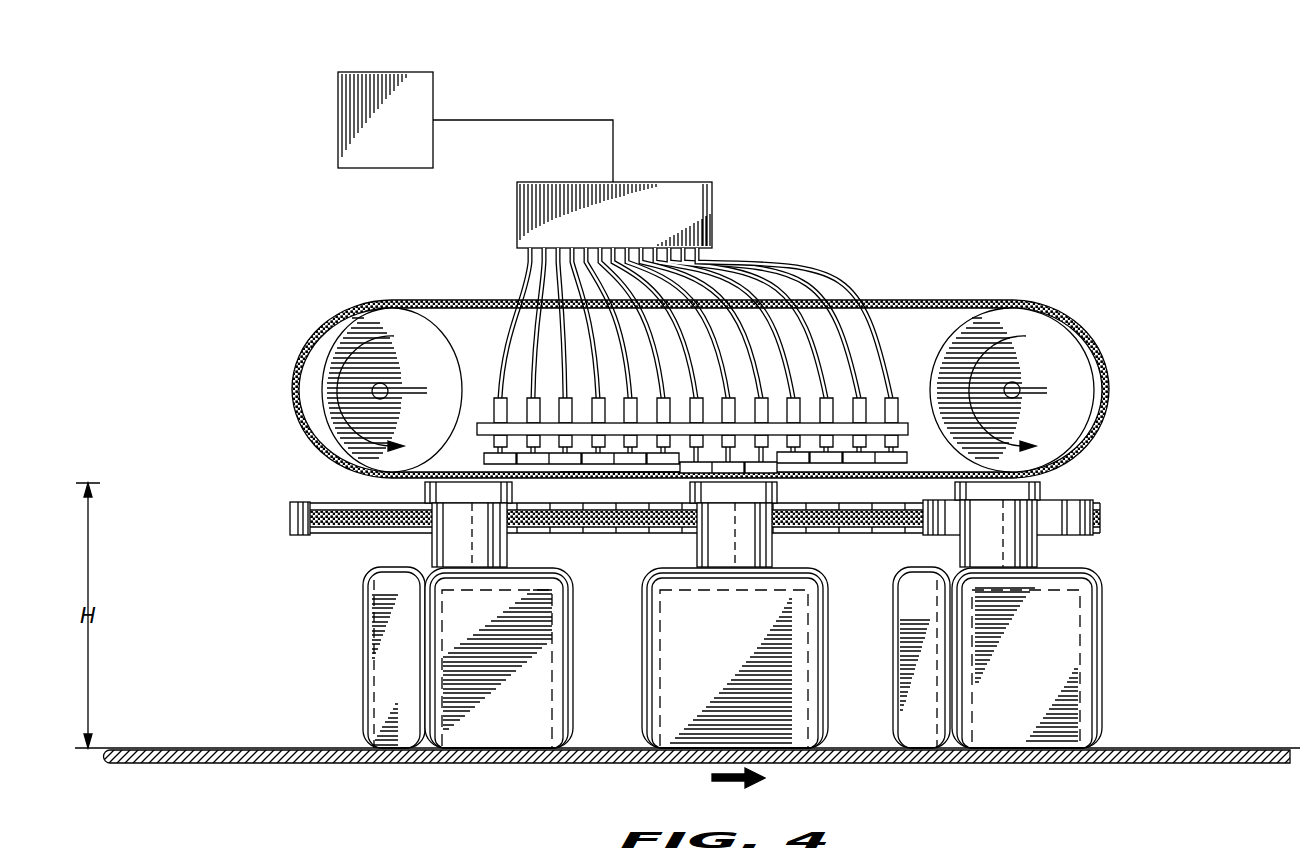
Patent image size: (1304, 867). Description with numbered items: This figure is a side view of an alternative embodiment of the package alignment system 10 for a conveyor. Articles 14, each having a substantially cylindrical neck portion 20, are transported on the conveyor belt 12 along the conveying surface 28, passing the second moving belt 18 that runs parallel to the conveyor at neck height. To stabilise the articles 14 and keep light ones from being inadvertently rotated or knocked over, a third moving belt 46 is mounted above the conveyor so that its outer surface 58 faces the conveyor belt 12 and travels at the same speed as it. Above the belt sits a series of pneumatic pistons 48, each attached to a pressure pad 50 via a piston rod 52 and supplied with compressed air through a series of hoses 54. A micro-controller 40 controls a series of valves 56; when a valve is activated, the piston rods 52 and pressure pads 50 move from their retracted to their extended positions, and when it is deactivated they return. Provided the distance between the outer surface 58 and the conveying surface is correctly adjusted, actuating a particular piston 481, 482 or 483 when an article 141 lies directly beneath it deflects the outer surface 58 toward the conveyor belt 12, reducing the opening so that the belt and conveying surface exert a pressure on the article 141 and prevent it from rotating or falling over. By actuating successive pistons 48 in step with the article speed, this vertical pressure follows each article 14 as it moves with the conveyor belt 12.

The package alignment system 10 is at (1106, 246).
The conveyor belt 12 is at (1235, 748).
The articles 14 is at (363, 664).
The article 141 is at (663, 670).
The second moving belt 18 is at (290, 519).
The neck portion 20 is at (1008, 528).
The conveying surface 28 is at (1160, 748).
The micro-controller 40 is at (375, 72).
The third moving belt 46 is at (612, 479).
The pneumatic pistons 48 is at (892, 398).
The pneumatic piston 481 is at (697, 398).
The pneumatic piston 482 is at (729, 398).
The pneumatic piston 483 is at (762, 398).
The pressure pad 50 is at (907, 447).
The piston rod 52 is at (907, 460).
The hoses 54 is at (756, 263).
The valves 56 is at (665, 182).
The outer surface 58 is at (940, 480).